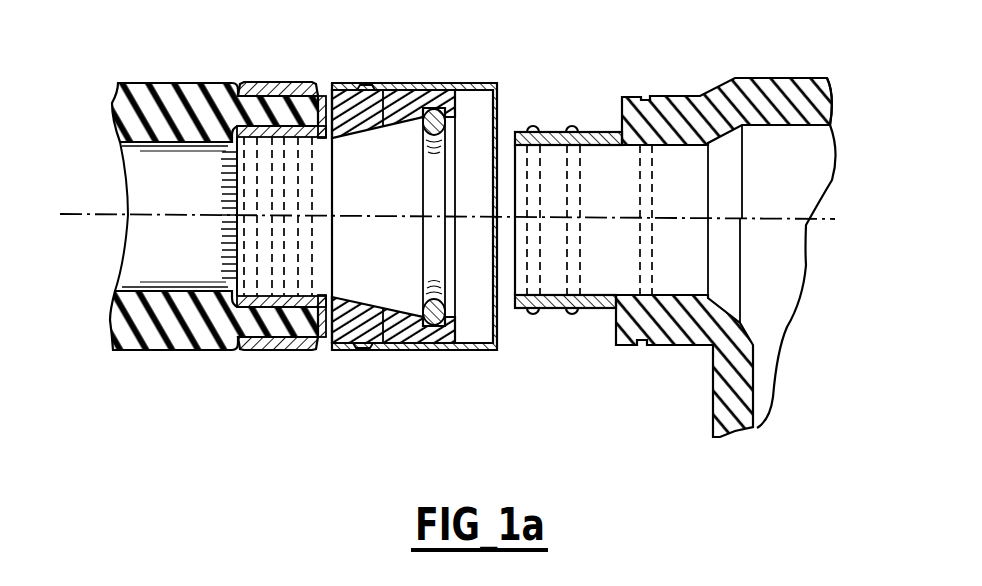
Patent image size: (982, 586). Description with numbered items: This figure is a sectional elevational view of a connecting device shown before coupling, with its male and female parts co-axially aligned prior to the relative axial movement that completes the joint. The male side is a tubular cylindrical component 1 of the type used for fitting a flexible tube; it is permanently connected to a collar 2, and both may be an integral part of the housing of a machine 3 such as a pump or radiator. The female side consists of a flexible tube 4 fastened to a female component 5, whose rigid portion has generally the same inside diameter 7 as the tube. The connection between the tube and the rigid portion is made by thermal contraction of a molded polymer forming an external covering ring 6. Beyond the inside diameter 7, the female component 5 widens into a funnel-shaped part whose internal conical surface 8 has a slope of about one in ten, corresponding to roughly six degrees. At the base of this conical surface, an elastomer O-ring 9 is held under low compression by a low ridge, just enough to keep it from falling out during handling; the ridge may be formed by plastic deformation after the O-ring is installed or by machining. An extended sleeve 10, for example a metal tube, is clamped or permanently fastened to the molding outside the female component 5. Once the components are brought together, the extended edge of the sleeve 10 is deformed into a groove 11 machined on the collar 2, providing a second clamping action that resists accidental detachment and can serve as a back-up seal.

The tubular cylindrical component 1 is at (557, 130).
The collar 2 is at (678, 97).
The machine 3 is at (780, 187).
The flexible tube 4 is at (165, 108).
The female component 5 is at (399, 112).
The external covering ring 6 is at (284, 77).
The inside diameter 7 is at (277, 290).
The internal conical surface 8 is at (383, 346).
The elastomer O-ring 9 is at (435, 346).
The extended sleeve 10 is at (485, 358).
The groove 11 is at (637, 350).